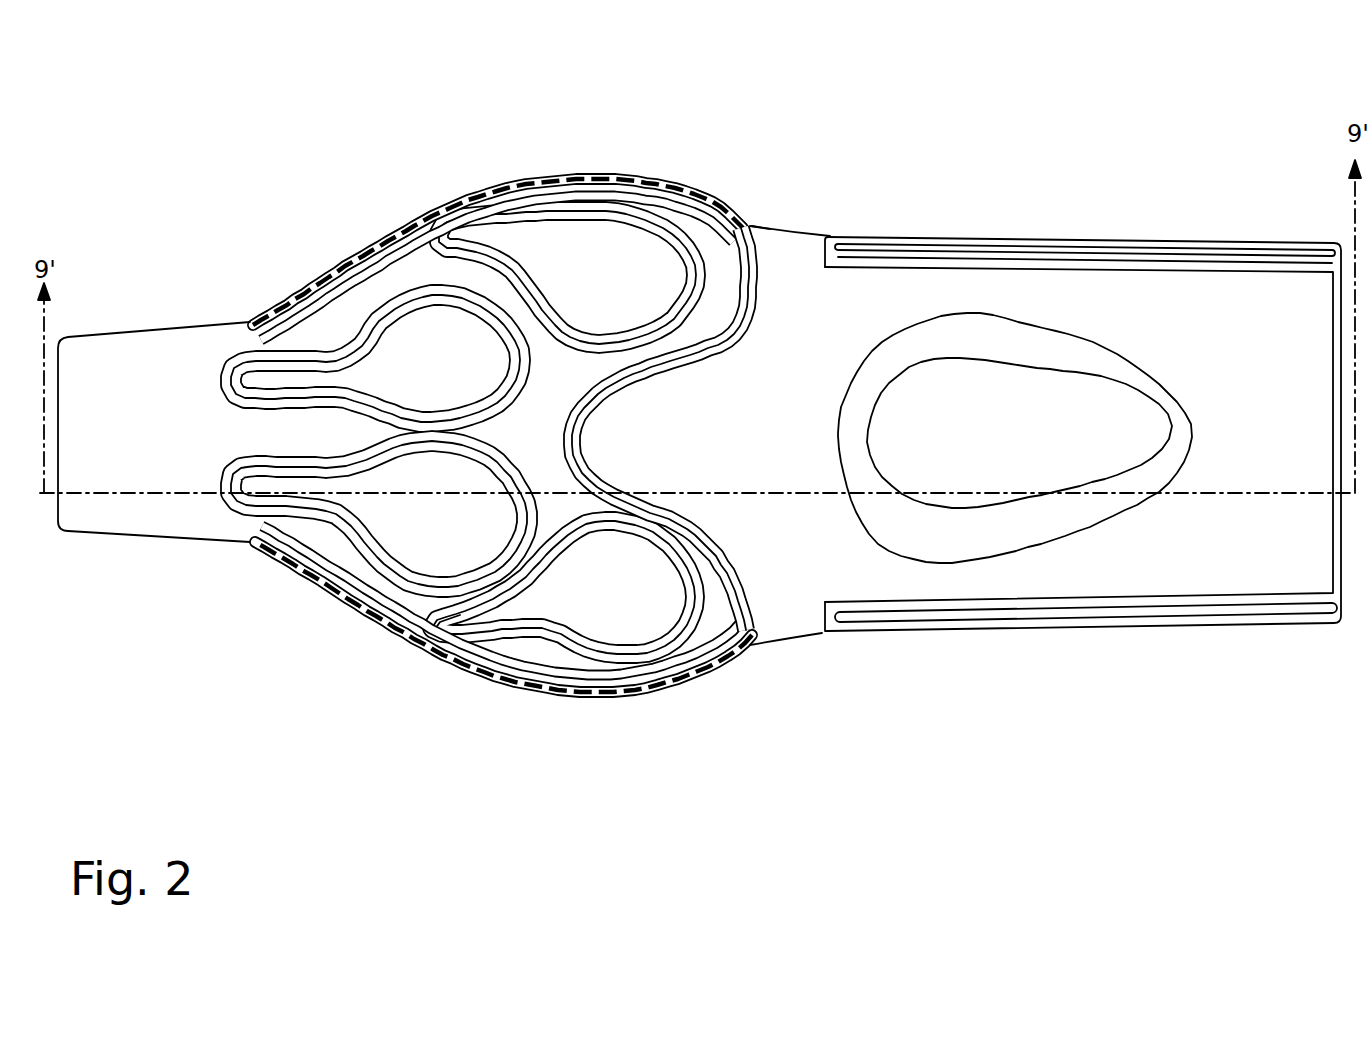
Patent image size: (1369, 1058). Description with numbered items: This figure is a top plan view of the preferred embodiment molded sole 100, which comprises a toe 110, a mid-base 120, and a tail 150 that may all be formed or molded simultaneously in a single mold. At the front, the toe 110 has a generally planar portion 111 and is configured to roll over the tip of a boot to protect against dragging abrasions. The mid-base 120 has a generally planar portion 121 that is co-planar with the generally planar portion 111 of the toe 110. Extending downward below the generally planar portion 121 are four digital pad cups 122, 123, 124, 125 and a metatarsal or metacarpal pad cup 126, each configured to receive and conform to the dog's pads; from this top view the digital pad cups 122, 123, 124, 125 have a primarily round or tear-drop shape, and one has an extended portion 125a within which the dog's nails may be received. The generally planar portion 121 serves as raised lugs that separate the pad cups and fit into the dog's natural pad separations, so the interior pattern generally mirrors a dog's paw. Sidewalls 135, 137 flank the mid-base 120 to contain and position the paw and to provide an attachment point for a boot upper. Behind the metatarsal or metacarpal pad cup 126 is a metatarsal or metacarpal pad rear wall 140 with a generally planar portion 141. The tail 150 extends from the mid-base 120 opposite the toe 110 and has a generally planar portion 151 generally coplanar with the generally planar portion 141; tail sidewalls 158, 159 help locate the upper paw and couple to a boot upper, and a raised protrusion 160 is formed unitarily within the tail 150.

The molded sole 100 is at (699, 418).
The toe 110 is at (154, 407).
The generally planar portion 111 is at (166, 457).
The mid-base 120 is at (491, 425).
The generally planar portion 121 is at (758, 224).
The digital pad cup 122 is at (618, 283).
The digital pad cup 123 is at (424, 369).
The digital pad cup 124 is at (441, 543).
The digital pad cup 125 is at (619, 600).
The extended portion 125a is at (471, 632).
The metatarsal or metacarpal pad cup 126 is at (719, 450).
The sidewall 135 is at (405, 656).
The sidewall 137 is at (553, 175).
The metatarsal or metacarpal pad rear wall 140 is at (830, 240).
The metatarsal or metacarpal pad rear wall generally planar portion 141 is at (817, 637).
The tail 150 is at (1083, 457).
The generally planar portion 151 is at (1194, 569).
The tail sidewall 158 is at (1165, 243).
The tail sidewall 159 is at (1233, 626).
The raised protrusion 160 is at (994, 435).